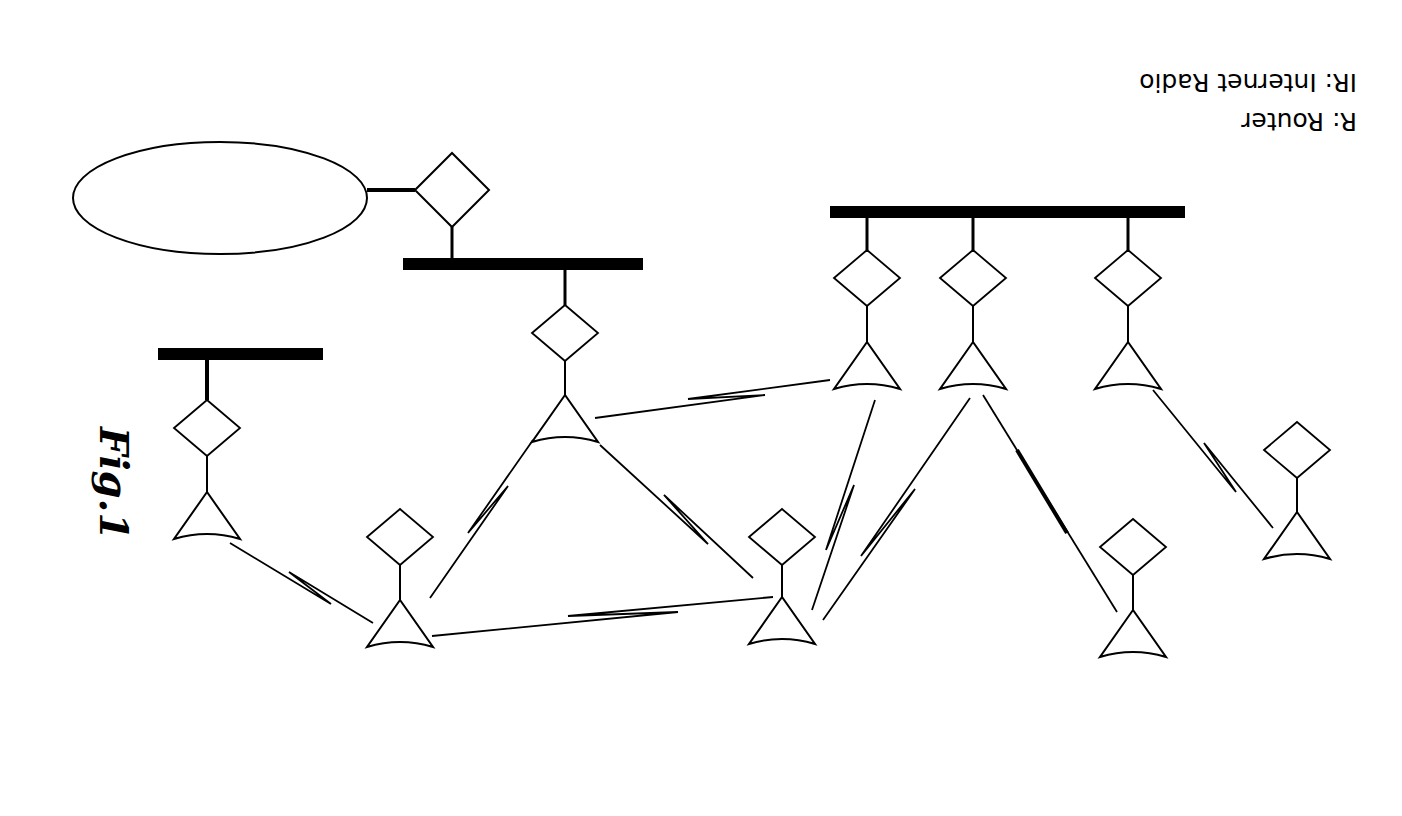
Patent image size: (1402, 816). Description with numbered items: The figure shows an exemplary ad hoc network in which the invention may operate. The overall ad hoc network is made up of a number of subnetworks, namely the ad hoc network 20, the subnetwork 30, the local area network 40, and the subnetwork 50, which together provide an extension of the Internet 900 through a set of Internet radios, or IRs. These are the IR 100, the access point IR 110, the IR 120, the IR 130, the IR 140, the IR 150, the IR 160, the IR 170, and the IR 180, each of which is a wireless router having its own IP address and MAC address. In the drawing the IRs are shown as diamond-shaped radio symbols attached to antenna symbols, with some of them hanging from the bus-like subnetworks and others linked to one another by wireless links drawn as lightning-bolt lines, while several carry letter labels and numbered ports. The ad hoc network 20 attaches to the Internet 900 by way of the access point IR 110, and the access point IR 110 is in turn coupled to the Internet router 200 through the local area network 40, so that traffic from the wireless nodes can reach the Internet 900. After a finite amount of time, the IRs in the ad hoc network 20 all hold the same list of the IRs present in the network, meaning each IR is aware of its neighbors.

The ad hoc network 20 is at (622, 678).
The subnetwork 30 is at (1007, 196).
The local area network 40 is at (523, 242).
The subnetwork 50 is at (240, 335).
The IR 100 is at (992, 321).
The access point IR 110 is at (550, 371).
The IR 120 is at (403, 572).
The IR 130 is at (788, 581).
The IR 140 is at (838, 335).
The IR 150 is at (192, 465).
The IR 160 is at (1139, 593).
The IR 170 is at (1315, 508).
The IR 180 is at (1148, 327).
The Internet router 200 is at (428, 187).
The Internet 900 is at (220, 198).